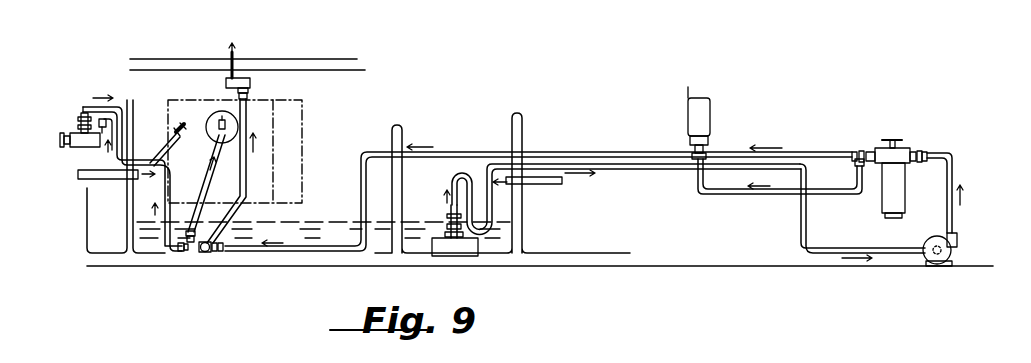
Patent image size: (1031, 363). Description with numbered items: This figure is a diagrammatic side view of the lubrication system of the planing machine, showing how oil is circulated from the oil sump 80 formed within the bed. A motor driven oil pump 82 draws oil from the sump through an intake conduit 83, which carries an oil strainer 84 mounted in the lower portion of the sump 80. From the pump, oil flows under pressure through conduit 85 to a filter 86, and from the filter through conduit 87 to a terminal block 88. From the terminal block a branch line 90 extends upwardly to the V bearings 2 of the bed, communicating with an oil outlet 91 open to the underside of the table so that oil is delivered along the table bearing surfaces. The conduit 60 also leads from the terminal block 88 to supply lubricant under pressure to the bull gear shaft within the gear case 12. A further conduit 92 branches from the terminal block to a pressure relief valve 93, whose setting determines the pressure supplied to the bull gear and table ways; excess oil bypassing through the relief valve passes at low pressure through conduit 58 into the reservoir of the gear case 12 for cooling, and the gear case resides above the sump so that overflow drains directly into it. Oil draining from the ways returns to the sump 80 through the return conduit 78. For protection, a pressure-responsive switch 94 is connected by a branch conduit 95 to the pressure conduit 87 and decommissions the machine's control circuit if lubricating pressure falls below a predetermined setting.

The V bearings (ways of the bed) 2 is at (172, 63).
The gear case 12 is at (300, 121).
The conduit 58 is at (162, 152).
The conduit 60 is at (214, 169).
The return conduit 78 is at (93, 180).
The oil sump 80 is at (382, 231).
The motor driven oil pump 82 is at (950, 246).
The intake conduit 83 is at (802, 224).
The oil strainer 84 is at (468, 250).
The conduit 85 is at (957, 159).
The filter 86 is at (888, 194).
The conduit (pressure conduit) 87 is at (590, 152).
The terminal block 88 is at (208, 253).
The branch line 90 is at (248, 172).
The oil outlet 91 is at (234, 55).
The conduit 92 is at (163, 194).
The pressure relief valve 93 is at (75, 135).
The pressure-responsive switch 94 is at (712, 114).
The branch conduit 95 is at (737, 194).